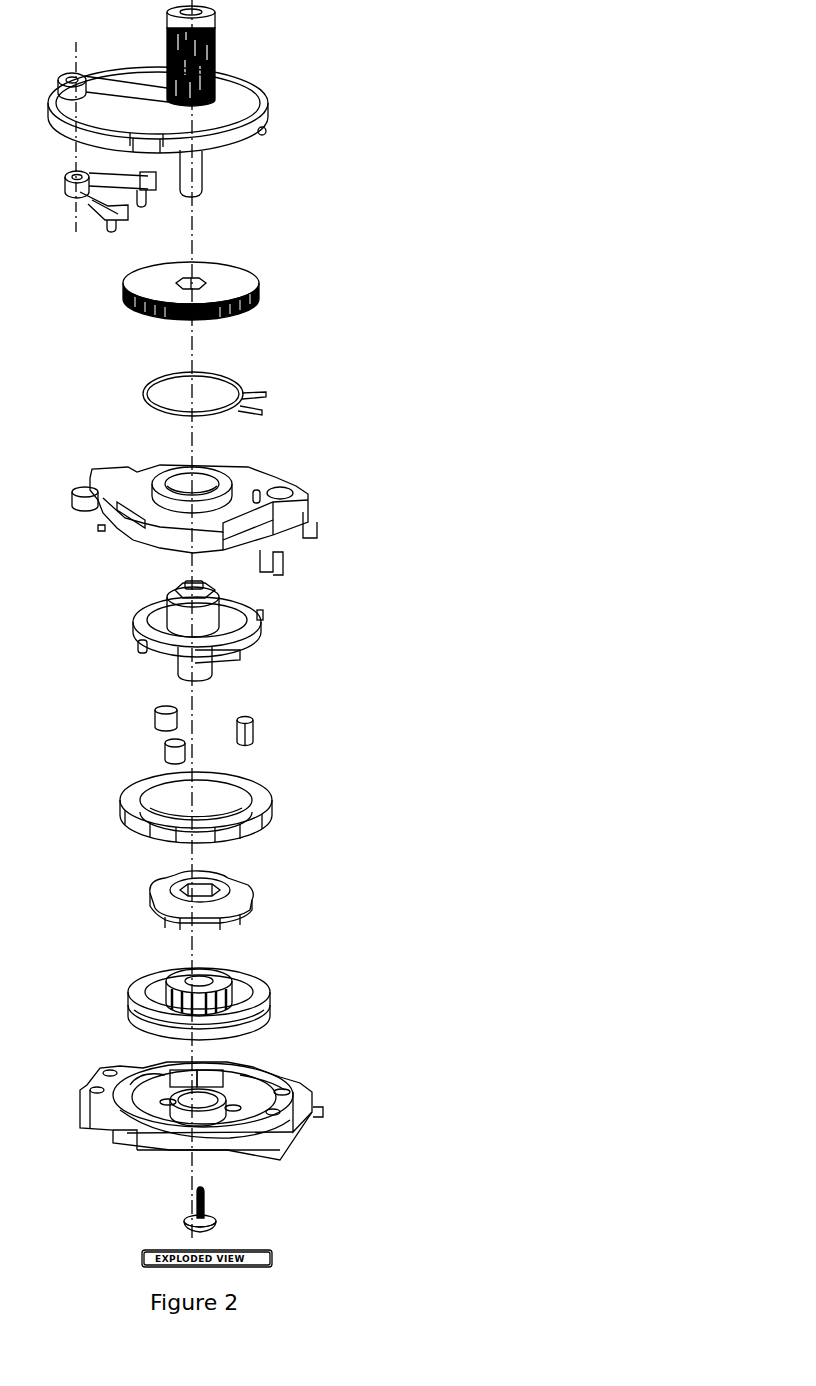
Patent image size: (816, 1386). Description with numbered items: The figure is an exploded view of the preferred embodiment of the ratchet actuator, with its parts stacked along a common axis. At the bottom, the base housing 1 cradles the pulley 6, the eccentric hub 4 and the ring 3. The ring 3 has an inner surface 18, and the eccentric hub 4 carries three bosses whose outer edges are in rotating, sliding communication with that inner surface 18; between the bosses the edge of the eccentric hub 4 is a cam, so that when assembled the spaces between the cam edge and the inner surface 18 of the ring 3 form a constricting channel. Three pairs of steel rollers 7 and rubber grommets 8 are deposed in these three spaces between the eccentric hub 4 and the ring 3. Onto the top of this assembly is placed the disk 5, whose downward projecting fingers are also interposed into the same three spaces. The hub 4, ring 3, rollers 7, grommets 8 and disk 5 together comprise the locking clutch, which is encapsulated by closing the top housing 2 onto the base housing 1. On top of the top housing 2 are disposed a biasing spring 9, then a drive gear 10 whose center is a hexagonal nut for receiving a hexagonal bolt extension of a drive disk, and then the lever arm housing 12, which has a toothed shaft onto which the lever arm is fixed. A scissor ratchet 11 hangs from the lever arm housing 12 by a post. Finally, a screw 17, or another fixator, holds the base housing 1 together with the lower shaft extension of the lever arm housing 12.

The base housing 1 is at (320, 1122).
The top housing 2 is at (306, 490).
The ring 3 is at (270, 804).
The eccentric hub 4 is at (255, 900).
The disk 5 is at (262, 609).
The pulley 6 is at (270, 997).
The steel rollers 7 is at (250, 718).
The rubber grommets 8 is at (252, 723).
The biasing spring 9 is at (268, 398).
The drive gear 10 is at (258, 285).
The scissor ratchet 11 is at (240, 183).
The lever arm housing 12 is at (273, 108).
The screw 17 is at (207, 1208).
The inner surface 18 is at (255, 777).